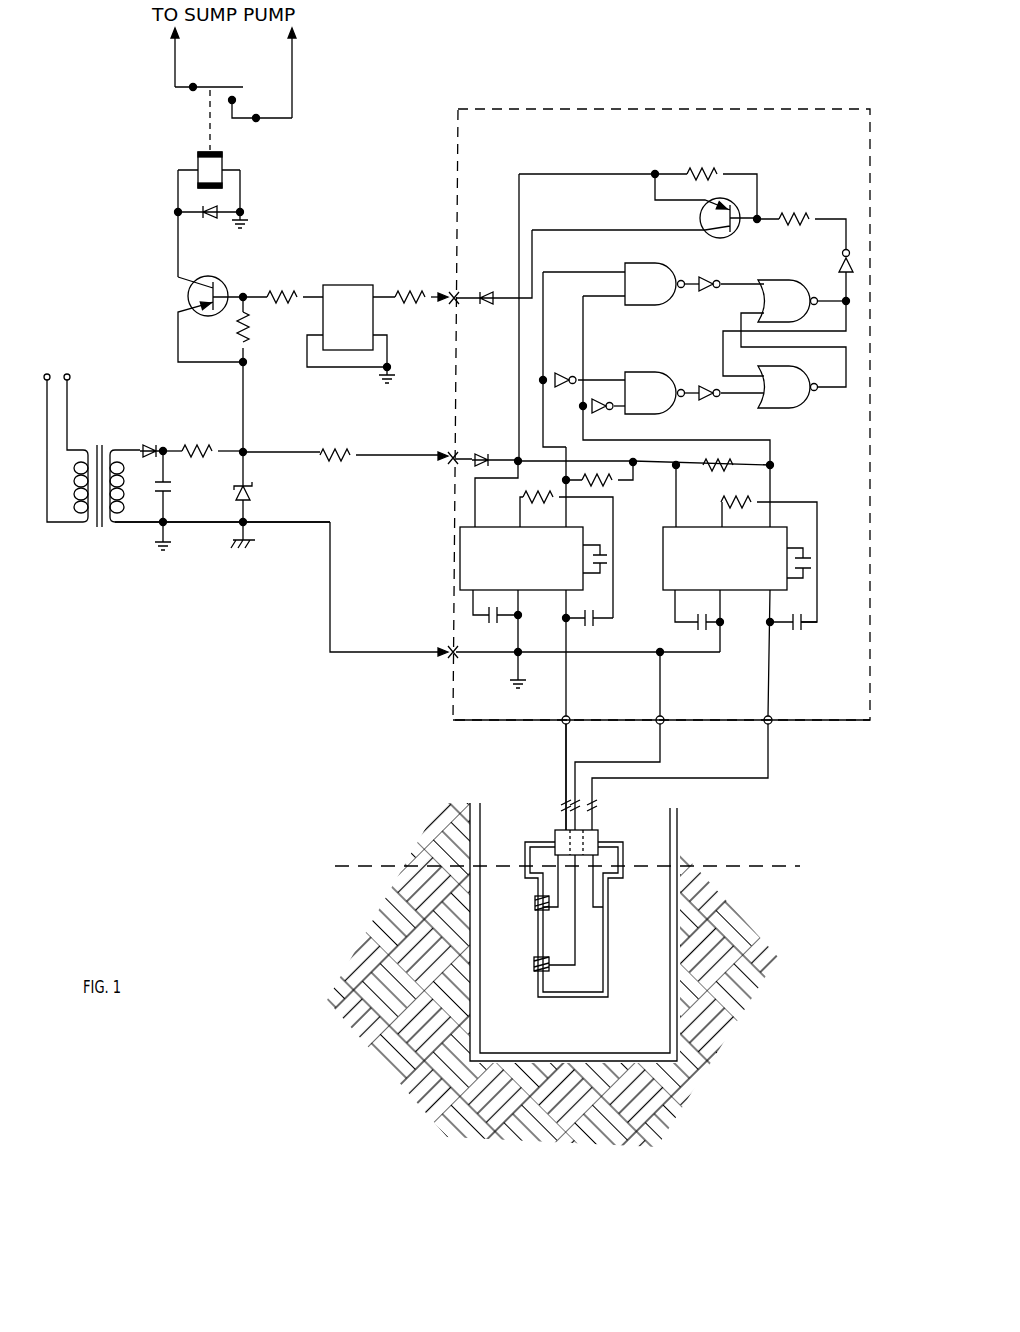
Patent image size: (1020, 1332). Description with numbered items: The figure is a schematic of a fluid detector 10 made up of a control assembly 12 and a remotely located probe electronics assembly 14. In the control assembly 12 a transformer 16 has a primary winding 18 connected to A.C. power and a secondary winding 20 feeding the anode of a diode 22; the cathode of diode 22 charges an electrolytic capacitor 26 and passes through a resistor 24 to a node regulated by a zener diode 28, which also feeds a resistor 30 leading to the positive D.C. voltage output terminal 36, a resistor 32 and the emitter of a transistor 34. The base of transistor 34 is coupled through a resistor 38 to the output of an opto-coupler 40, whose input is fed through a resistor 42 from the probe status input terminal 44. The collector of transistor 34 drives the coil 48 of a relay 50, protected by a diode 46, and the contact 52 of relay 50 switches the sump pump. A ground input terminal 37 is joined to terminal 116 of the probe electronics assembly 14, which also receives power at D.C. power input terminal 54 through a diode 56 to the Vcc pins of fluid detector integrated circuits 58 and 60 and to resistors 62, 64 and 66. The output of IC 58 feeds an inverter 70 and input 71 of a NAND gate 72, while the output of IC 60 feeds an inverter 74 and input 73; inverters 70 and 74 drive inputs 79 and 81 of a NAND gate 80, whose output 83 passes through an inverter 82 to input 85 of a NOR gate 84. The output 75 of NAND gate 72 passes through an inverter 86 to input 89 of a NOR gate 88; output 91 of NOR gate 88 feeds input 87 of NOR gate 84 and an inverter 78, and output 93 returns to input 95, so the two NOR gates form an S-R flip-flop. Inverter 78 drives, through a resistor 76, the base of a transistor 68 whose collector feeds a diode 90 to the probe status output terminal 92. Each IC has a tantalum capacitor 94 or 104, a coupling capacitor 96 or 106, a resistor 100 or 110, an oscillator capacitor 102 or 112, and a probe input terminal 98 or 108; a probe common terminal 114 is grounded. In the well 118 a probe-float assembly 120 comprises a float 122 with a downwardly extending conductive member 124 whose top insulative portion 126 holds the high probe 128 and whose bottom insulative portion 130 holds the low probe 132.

The fluid detector 10 is at (380, 696).
The control assembly 12 is at (256, 626).
The probe electronics assembly 14 is at (470, 736).
The transformer 16 is at (92, 543).
The primary winding 18 is at (86, 450).
The secondary winding 20 is at (124, 489).
The diode 22 is at (151, 446).
The resistor 24 is at (205, 447).
The electrolytic capacitor 26 is at (168, 490).
The zener diode 28 is at (252, 490).
The resistor 30 is at (340, 448).
The resistor 32 is at (250, 338).
The transistor 34 is at (190, 292).
The positive D.C. voltage output terminal 36 is at (443, 462).
The probe electronics assembly ground input terminal 37 is at (440, 648).
The resistor 38 is at (287, 292).
The opto-coupler 40 is at (349, 284).
The resistor 42 is at (414, 292).
The probe status input terminal 44 is at (446, 306).
The diode 46 is at (207, 222).
The coil 48 is at (213, 168).
The relay 50 is at (145, 152).
The contact 52 is at (223, 86).
The D.C. power input terminal 54 is at (456, 454).
The diode 56 is at (487, 453).
The fluid detector integrated circuit 58 is at (536, 590).
The fluid detector integrated circuit 60 is at (745, 592).
The resistor 62 is at (615, 486).
The resistor 64 is at (723, 477).
The resistor 66 is at (709, 172).
The transistor 68 is at (702, 226).
The inverter 70 is at (563, 374).
The input 71 is at (613, 271).
The NAND gate 72 is at (649, 263).
The input 73 is at (611, 298).
The inverter 74 is at (593, 411).
The output 75 is at (683, 280).
The resistor 76 is at (811, 214).
The inverter 78 is at (856, 266).
The input 79 is at (605, 379).
The NAND gate 80 is at (648, 372).
The input 81 is at (617, 412).
The inverter 82 is at (700, 401).
The output 83 is at (683, 389).
The NOR gate 84 is at (788, 409).
The input 85 is at (747, 397).
The inverter 86 is at (709, 278).
The input 87 is at (762, 375).
The NOR gate 88 is at (790, 280).
The input 89 is at (750, 284).
The diode 90 is at (488, 308).
The output 91 is at (818, 305).
The probe status output terminal 92 is at (456, 296).
The output 93 is at (818, 391).
The tantalum capacitor 94 is at (491, 620).
The input 95 is at (750, 310).
The capacitor 96 is at (594, 624).
The probe input terminal 98 is at (569, 715).
The resistor 100 is at (532, 499).
The capacitor 102 is at (607, 553).
The tantalum capacitor 104 is at (692, 626).
The capacitor 106 is at (803, 627).
The probe input terminal 108 is at (773, 715).
The resistor 110 is at (758, 501).
The capacitor 112 is at (809, 557).
The probe common terminal 114 is at (665, 715).
The terminal 116 is at (456, 655).
The well 118 is at (482, 808).
The probe-float assembly 120 is at (615, 826).
The float 122 is at (623, 852).
The conductive member 124 is at (583, 996).
The top insulative portion 126 is at (535, 910).
The high probe 128 is at (535, 904).
The bottom insulative portion 130 is at (548, 970).
The low probe 132 is at (535, 965).